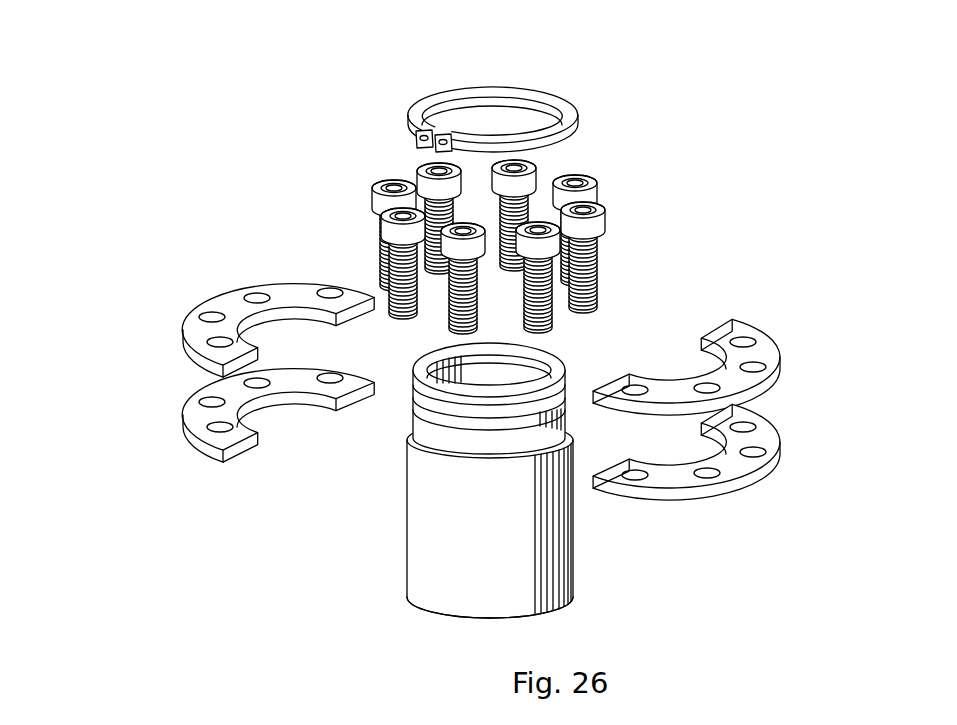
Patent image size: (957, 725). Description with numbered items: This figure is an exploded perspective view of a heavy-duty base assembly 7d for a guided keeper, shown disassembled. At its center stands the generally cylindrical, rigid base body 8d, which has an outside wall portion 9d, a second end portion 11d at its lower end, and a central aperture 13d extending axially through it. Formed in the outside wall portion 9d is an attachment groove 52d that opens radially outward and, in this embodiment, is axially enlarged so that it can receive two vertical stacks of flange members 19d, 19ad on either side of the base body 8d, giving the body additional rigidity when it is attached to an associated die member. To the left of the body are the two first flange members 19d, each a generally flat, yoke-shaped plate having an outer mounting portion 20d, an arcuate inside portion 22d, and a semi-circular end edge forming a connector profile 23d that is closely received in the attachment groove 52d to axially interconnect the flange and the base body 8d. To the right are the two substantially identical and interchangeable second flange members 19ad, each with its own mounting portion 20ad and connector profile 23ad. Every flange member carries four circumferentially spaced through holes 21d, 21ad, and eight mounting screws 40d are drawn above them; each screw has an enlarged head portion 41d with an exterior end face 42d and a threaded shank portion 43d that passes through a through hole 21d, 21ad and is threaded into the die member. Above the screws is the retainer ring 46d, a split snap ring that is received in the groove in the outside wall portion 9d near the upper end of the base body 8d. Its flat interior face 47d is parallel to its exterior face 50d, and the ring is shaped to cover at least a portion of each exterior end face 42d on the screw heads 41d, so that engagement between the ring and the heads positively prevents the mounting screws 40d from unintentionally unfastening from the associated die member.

The base assembly 7d is at (427, 62).
The base body 8d is at (412, 605).
The outside wall portion 9d is at (427, 562).
The second end portion 11d is at (565, 603).
The central aperture 13d is at (533, 368).
The flange member 19d is at (182, 323).
The mounting portion 20d is at (215, 302).
The through hole 21d is at (263, 295).
The arcuate inside portion 22d is at (307, 288).
The connector profile 23d is at (293, 312).
The flange member 19ad is at (758, 327).
The mounting portion 20ad is at (773, 465).
The through hole 21ad is at (763, 363).
The connector profile 23ad is at (712, 348).
The mounting screw 40d is at (595, 185).
The head portion 41d is at (375, 201).
The exterior end face 42d is at (380, 182).
The threaded shank portion 43d is at (595, 260).
The retainer ring 46d is at (576, 103).
The interior face 47d is at (410, 127).
The exterior face 50d is at (547, 98).
The attachment groove 52d is at (443, 438).